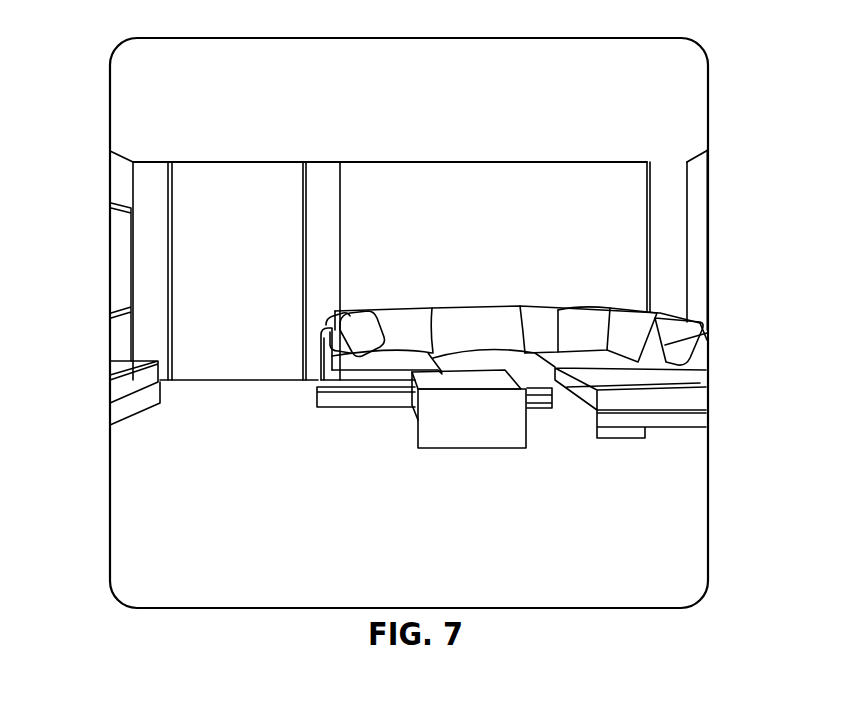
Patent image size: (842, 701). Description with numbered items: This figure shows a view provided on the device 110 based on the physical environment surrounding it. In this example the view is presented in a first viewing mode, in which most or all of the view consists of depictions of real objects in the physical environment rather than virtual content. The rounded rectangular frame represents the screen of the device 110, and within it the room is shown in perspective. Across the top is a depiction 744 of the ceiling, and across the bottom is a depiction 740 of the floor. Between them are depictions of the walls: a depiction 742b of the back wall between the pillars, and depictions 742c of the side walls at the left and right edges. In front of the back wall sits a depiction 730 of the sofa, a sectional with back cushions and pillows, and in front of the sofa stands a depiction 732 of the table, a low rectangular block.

The device 110 is at (152, 38).
The depiction of the sofa 730 is at (525, 318).
The depiction of the table 732 is at (515, 437).
The depiction of the floor 740 is at (347, 526).
The depiction of the wall 742b is at (480, 223).
The depiction of the wall 742c is at (122, 182).
The depiction of the ceiling 744 is at (453, 105).